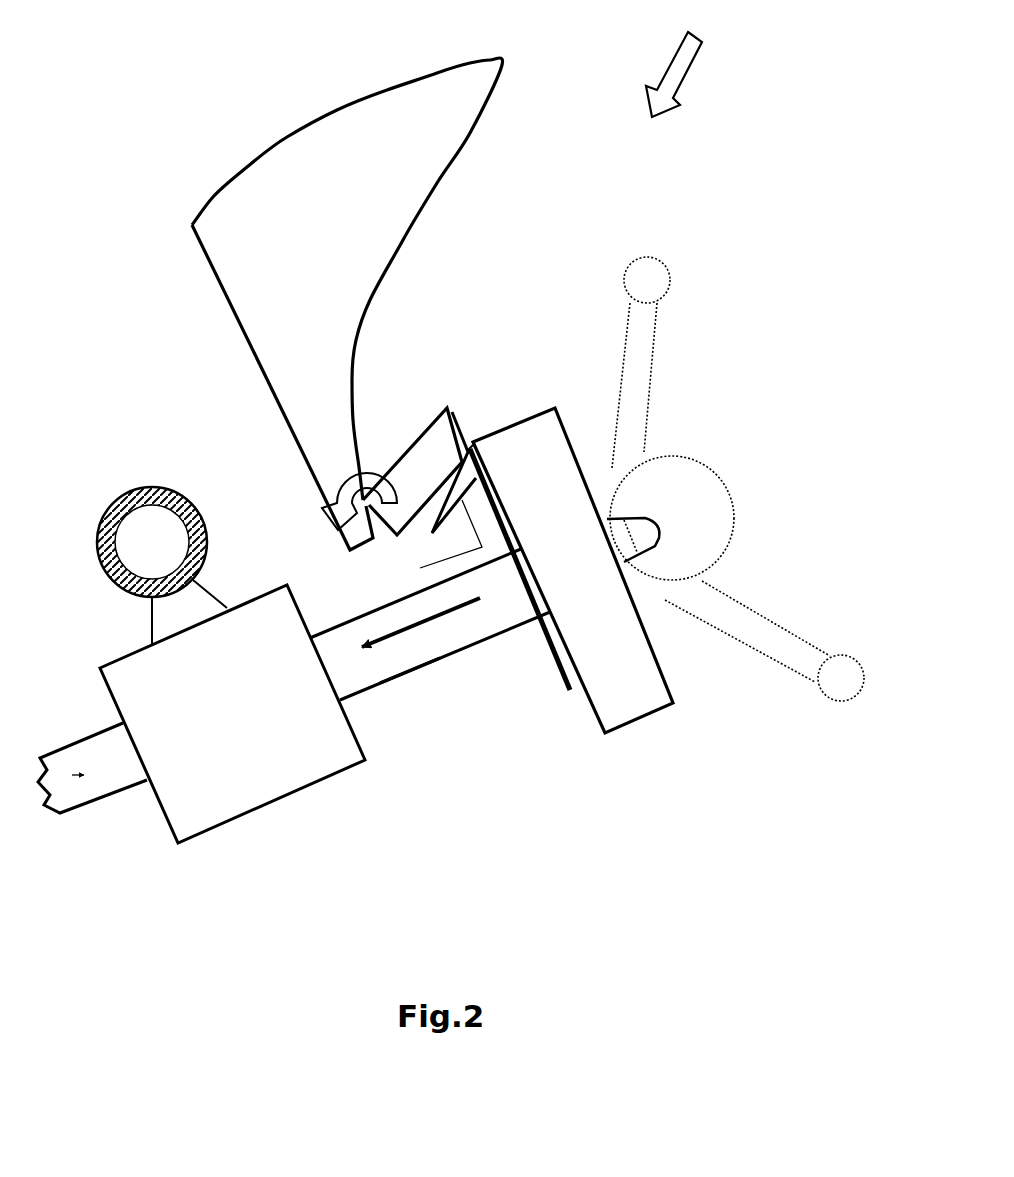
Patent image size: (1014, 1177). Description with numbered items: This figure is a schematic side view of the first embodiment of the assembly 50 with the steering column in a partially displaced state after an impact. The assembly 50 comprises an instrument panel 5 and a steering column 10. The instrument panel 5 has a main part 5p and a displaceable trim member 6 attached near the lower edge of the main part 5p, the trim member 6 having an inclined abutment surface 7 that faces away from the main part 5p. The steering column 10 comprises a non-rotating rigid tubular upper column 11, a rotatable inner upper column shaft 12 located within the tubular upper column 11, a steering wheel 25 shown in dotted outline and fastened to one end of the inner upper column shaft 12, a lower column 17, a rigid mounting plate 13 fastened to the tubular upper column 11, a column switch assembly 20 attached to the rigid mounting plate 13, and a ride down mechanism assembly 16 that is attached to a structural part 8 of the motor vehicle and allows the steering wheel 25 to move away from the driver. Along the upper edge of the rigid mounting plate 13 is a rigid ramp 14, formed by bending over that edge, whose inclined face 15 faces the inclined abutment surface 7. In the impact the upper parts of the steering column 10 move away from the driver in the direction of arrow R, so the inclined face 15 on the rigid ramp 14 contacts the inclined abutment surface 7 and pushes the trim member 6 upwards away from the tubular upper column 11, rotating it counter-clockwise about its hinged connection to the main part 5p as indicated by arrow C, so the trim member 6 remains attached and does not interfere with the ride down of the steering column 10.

The instrument panel 5 is at (222, 175).
The main part 5p is at (280, 243).
The trim member 6 is at (402, 453).
The inclined abutment surface 7 is at (456, 425).
The inclined face 15 is at (462, 428).
The arrow C is at (350, 480).
The arrow R is at (372, 632).
The rigid ramp 14 is at (482, 547).
The steering column 10 is at (488, 640).
The tubular upper column 11 is at (428, 665).
The rigid mounting plate 13 is at (557, 667).
The column switch assembly 20 is at (631, 724).
The structural part 8 is at (95, 542).
The ride down mechanism assembly 16 is at (106, 656).
The lower column 17 is at (102, 803).
The steering wheel 25 is at (605, 296).
The inner upper column shaft 12 is at (614, 508).
The assembly 50 is at (686, 64).